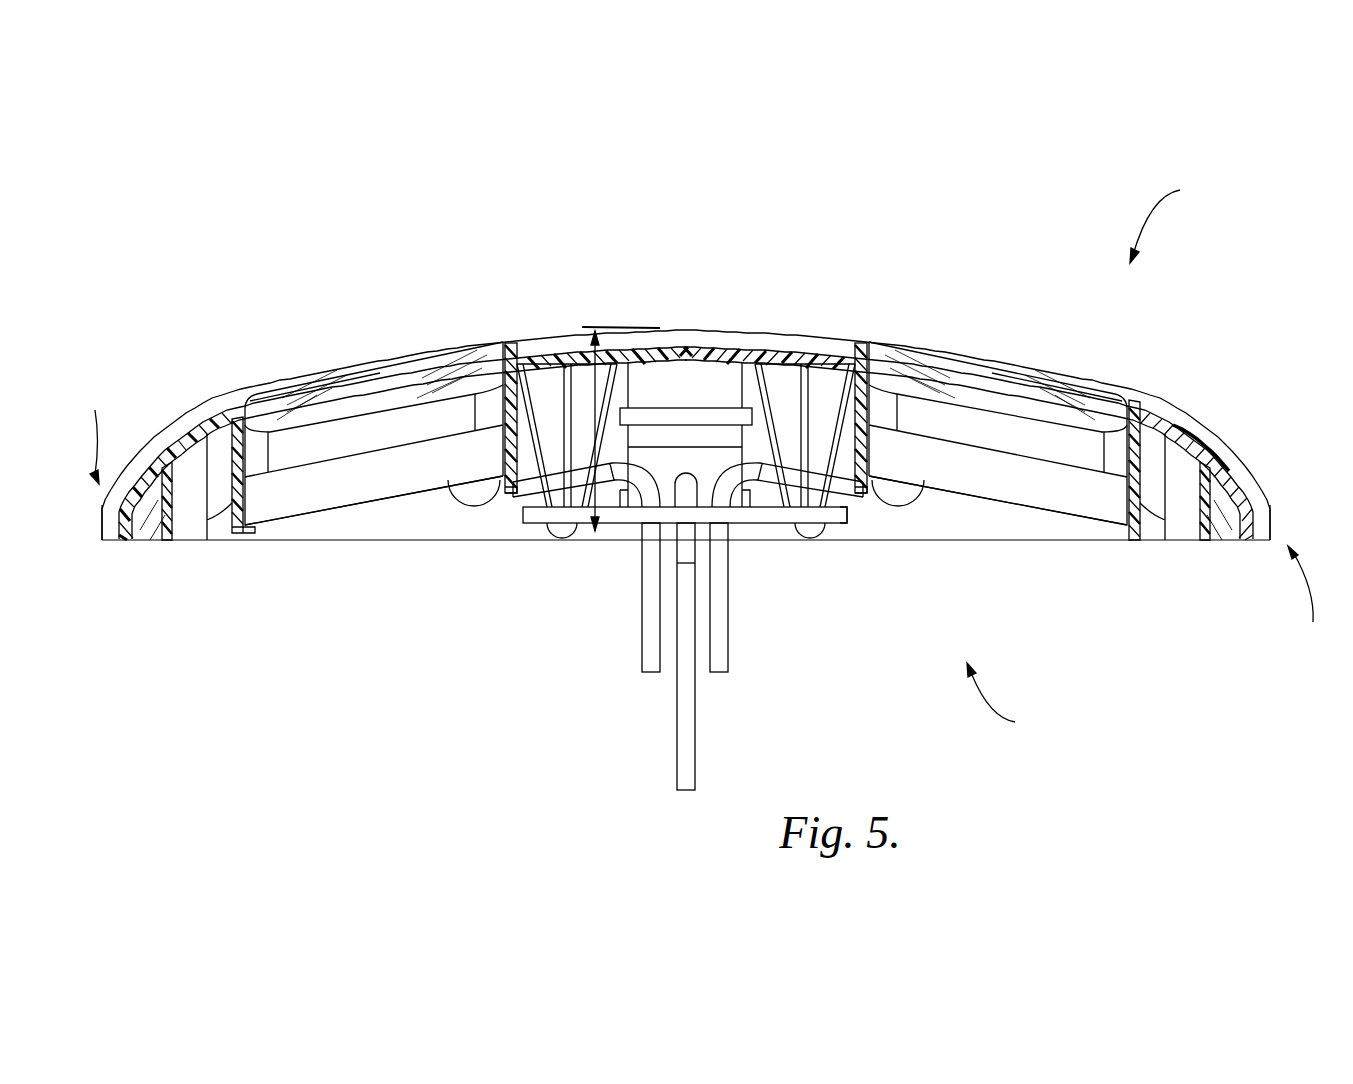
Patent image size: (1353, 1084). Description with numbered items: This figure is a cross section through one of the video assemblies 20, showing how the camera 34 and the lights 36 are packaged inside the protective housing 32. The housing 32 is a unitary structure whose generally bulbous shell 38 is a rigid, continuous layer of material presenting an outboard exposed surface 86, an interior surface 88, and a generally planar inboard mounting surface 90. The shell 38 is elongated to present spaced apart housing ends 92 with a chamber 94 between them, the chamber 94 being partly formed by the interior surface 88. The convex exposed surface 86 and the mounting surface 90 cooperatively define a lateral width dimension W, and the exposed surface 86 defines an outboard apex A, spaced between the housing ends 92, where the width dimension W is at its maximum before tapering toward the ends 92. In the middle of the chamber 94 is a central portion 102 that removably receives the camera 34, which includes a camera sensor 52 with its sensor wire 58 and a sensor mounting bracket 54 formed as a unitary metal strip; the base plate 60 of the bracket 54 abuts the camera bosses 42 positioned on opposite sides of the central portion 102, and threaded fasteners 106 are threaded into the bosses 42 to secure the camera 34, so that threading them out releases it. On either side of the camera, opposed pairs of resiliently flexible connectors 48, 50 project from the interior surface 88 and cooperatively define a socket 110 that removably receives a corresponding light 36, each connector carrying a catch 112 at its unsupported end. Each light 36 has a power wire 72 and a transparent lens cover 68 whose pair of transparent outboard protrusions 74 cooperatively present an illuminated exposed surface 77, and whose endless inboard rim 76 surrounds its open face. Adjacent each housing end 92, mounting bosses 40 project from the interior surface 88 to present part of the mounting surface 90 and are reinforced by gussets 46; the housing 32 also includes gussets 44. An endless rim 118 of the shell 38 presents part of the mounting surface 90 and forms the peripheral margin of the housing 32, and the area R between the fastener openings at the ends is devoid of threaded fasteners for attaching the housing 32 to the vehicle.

The video assembly 20 is at (1170, 220).
The protective housing 32 is at (1183, 437).
The camera 34 is at (722, 385).
The lights 36 is at (290, 505).
The shell 38 is at (1220, 458).
The mounting bosses 40 is at (178, 528).
The camera bosses 42 is at (535, 385).
The gussets 44 is at (563, 385).
The gussets 46 is at (130, 543).
The connector 48 is at (510, 390).
The connector 50 is at (210, 530).
The camera sensor 52 is at (705, 380).
The sensor mounting bracket 54 is at (597, 532).
The sensor wire 58 is at (686, 753).
The base plate 60 is at (845, 530).
The lens cover 68 is at (337, 490).
The power wire 72 is at (648, 645).
The outboard protrusions 74 is at (367, 380).
The inboard rim 76 is at (383, 497).
The illuminated exposed surface 77 is at (285, 395).
The outboard exposed surface 86 is at (1157, 400).
The interior surface 88 is at (443, 523).
The inboard mounting surface 90 is at (325, 543).
The housing ends 92 is at (702, 513).
The chamber 94 is at (475, 515).
The central portion 102 is at (773, 500).
The threaded fasteners 106 is at (562, 528).
The socket 110 is at (503, 418).
The catch 112 is at (247, 535).
The endless rim 118 is at (1090, 543).
The outboard apex A is at (684, 330).
The lateral width dimension W is at (597, 403).
The area R is at (1002, 699).